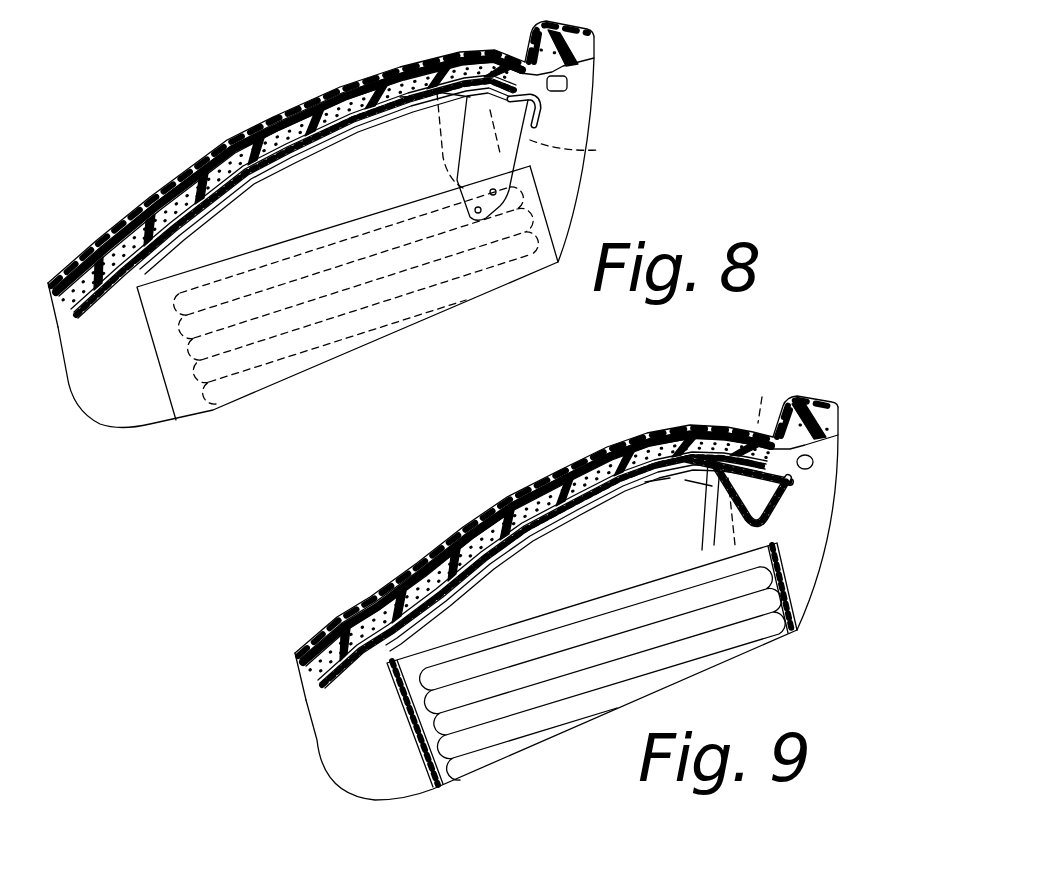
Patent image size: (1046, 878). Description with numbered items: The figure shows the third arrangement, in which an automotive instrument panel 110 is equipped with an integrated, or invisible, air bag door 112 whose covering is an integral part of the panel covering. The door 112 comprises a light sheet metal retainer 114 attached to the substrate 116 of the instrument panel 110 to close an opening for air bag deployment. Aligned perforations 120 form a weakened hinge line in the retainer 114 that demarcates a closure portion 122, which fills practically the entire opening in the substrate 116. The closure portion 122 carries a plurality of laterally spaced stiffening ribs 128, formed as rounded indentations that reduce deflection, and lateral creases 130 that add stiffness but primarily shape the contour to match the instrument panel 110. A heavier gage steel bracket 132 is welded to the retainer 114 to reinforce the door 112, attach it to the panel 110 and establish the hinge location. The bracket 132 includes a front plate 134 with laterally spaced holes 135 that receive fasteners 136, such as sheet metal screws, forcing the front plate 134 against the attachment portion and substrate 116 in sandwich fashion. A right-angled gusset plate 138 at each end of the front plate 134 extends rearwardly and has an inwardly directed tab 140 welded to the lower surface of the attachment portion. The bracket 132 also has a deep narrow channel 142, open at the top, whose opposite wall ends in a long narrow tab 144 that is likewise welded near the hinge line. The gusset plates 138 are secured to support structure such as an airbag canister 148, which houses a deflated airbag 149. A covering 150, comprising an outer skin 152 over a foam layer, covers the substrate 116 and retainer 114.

In FIG. 8, the automotive instrument panel 110 is at (80, 242).
In FIG. 9, the automotive instrument panel 110 is at (337, 613).
In FIG. 8, the integrated air bag door 112 is at (367, 60).
In FIG. 9, the integrated air bag door 112 is at (597, 440).
In FIG. 8, the retainer 114 is at (413, 97).
In FIG. 9, the retainer 114 is at (657, 480).
In FIG. 8, the substrate 116 is at (473, 83).
In FIG. 9, the substrate 116 is at (716, 460).
In FIG. 8, the perforations 120 is at (440, 100).
In FIG. 9, the perforations 120 is at (693, 483).
In FIG. 8, the closure portion 122 is at (187, 227).
In FIG. 9, the closure portion 122 is at (437, 603).
In FIG. 8, the stiffening ribs 128 is at (297, 180).
In FIG. 9, the stiffening ribs 128 is at (547, 570).
In FIG. 8, the lateral creases 130 is at (223, 193).
In FIG. 9, the lateral creases 130 is at (477, 563).
In FIG. 8, the bracket 132 is at (557, 123).
In FIG. 9, the bracket 132 is at (800, 497).
In FIG. 8, the front plate 134 is at (563, 80).
In FIG. 9, the front plate 134 is at (807, 443).
In FIG. 9, the holes 135 is at (800, 470).
In FIG. 8, the fasteners 136 is at (570, 70).
In FIG. 9, the fasteners 136 is at (813, 460).
In FIG. 8, the gusset plate 138 is at (500, 182).
In FIG. 9, the gusset plate 138 is at (740, 563).
In FIG. 8, the tab 140 is at (597, 150).
In FIG. 9, the tab 140 is at (767, 395).
In FIG. 8, the channel 142 is at (492, 158).
In FIG. 9, the channel 142 is at (724, 507).
In FIG. 8, the tab 144 is at (440, 153).
In FIG. 9, the tab 144 is at (700, 517).
In FIG. 8, the airbag canister 148 is at (170, 380).
In FIG. 9, the airbag canister 148 is at (417, 760).
In FIG. 8, the airbag 149 is at (373, 307).
In FIG. 9, the airbag 149 is at (523, 733).
In FIG. 8, the covering 150 is at (165, 167).
In FIG. 9, the covering 150 is at (387, 567).
In FIG. 8, the outer skin 152 is at (263, 113).
In FIG. 9, the outer skin 152 is at (497, 500).